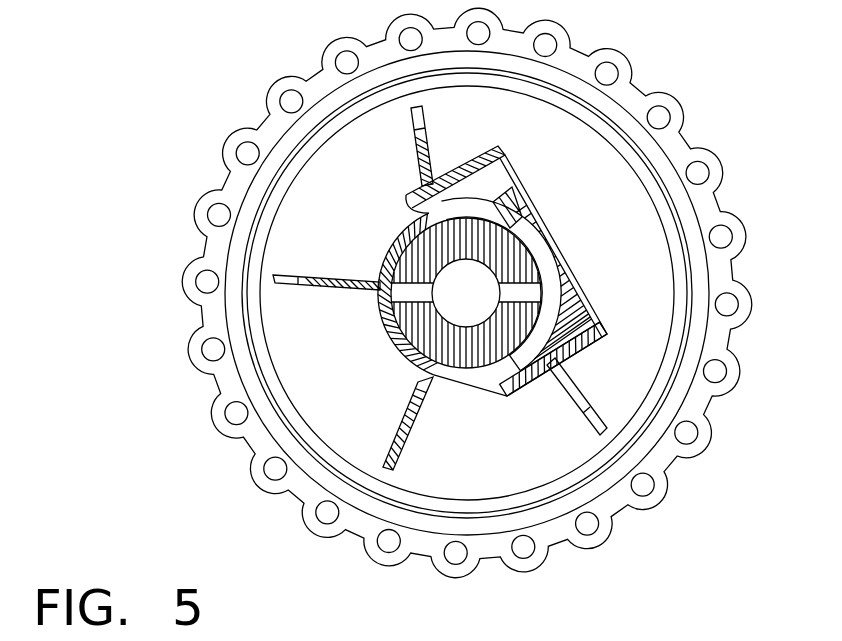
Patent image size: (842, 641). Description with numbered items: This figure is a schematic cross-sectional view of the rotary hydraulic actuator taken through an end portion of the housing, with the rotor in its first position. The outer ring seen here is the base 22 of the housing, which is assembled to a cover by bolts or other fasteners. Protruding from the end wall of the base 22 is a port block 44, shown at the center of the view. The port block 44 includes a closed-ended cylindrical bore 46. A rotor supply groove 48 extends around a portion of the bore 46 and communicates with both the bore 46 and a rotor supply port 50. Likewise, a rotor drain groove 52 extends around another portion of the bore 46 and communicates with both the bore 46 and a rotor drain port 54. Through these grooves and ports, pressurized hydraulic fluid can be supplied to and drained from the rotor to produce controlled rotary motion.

The base 22 is at (688, 135).
The port block 44 is at (380, 340).
The closed-ended cylindrical bore 46 is at (392, 258).
The rotor supply groove 48 is at (538, 337).
The rotor supply port 50 is at (582, 330).
The rotor drain groove 52 is at (510, 212).
The rotor drain port 54 is at (505, 166).